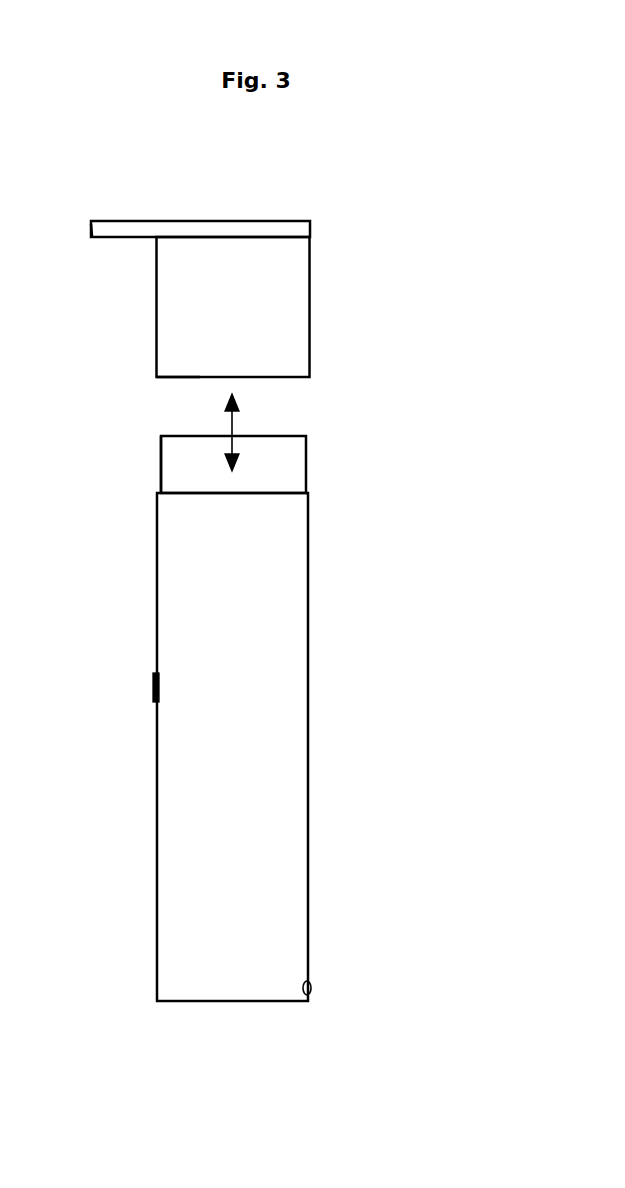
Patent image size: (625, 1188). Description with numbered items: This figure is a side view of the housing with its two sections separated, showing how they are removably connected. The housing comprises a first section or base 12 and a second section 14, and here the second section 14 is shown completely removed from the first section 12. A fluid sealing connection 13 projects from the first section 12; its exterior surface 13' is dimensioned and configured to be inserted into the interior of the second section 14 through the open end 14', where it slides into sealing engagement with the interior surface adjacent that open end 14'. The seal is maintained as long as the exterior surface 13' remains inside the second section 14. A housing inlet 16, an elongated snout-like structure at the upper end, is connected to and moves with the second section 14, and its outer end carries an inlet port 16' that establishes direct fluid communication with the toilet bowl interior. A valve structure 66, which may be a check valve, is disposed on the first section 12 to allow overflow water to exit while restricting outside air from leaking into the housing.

The first section or base 12 is at (328, 652).
The fluid sealing connection 13 is at (326, 457).
The exterior surface 13' is at (118, 464).
The second section 14 is at (329, 307).
The open end 14' is at (134, 377).
The housing inlet 16 is at (200, 201).
The inlet port 16' is at (53, 226).
The valve structure 66 is at (153, 687).